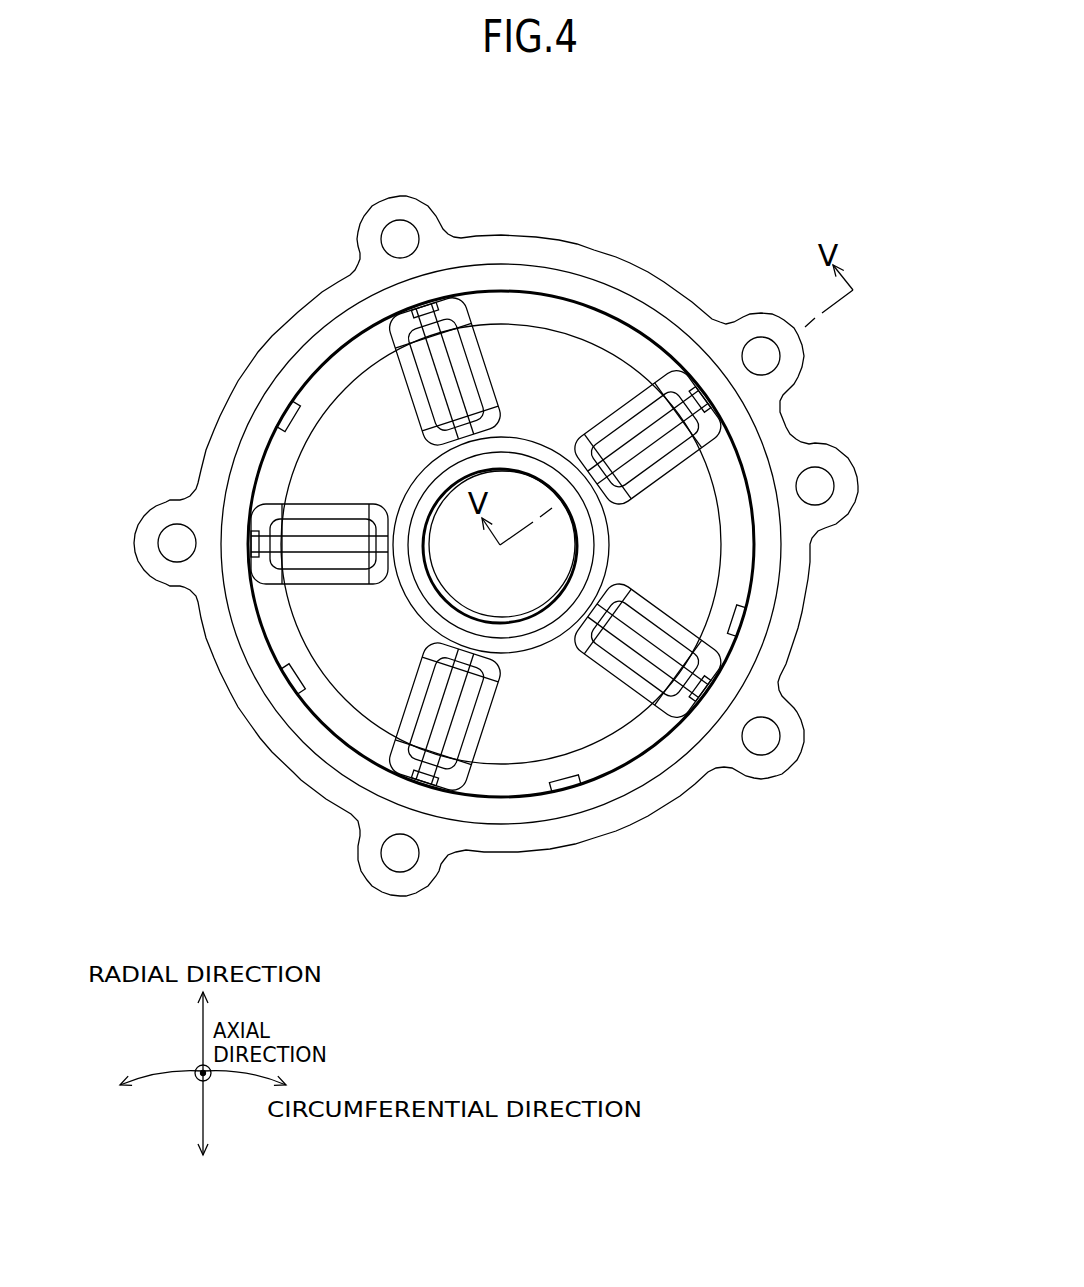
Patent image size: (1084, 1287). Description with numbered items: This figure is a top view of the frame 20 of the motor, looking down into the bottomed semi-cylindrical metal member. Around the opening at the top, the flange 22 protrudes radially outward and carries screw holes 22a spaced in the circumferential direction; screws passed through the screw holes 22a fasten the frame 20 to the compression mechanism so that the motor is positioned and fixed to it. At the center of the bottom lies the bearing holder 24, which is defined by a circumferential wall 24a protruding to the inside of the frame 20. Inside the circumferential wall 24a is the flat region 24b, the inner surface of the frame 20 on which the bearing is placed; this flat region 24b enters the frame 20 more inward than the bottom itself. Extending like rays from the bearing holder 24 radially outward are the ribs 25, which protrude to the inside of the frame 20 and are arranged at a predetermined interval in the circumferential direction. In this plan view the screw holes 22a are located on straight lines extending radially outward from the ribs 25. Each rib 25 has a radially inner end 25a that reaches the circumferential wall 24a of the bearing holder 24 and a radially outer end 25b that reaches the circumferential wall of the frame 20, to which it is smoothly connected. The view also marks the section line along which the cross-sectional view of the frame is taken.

The frame 20 is at (203, 257).
The flange 22 is at (507, 247).
The screw holes 22a is at (400, 233).
The bearing holder 24 is at (515, 600).
The circumferential wall 24a is at (555, 634).
The flat region 24b is at (513, 497).
The ribs 25 is at (450, 438).
The radially inner end 25a is at (423, 367).
The radially outer end 25b is at (415, 312).